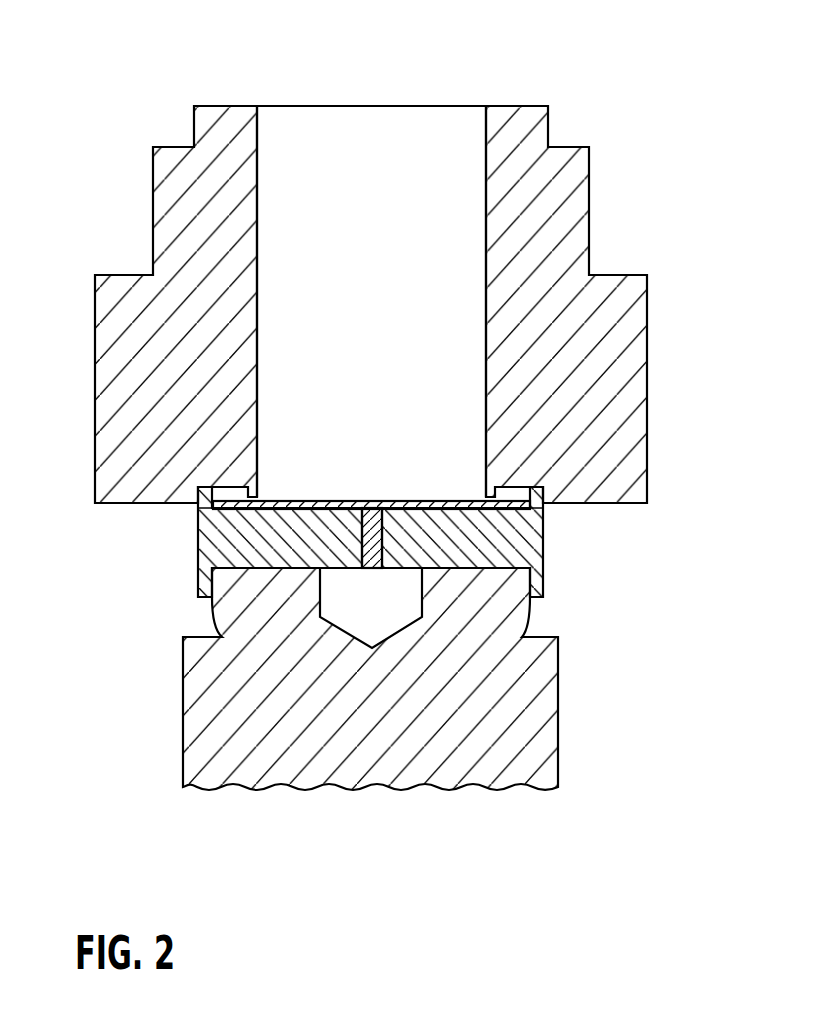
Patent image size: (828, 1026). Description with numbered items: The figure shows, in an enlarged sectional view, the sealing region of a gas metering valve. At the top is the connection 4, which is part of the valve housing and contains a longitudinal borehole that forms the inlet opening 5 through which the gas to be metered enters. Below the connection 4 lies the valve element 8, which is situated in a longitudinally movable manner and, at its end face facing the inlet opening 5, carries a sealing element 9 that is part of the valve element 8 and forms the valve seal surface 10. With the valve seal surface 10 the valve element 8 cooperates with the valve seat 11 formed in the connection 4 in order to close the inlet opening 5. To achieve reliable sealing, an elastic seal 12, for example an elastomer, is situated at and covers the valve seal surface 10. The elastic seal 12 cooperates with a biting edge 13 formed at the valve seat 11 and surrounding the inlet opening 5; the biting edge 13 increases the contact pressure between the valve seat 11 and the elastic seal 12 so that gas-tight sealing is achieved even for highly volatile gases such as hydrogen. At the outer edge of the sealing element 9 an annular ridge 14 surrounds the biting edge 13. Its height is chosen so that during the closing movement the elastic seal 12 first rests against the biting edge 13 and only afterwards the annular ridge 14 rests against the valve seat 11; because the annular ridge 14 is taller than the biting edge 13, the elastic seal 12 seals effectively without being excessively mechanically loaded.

The connection 4 is at (535, 217).
The inlet opening 5 is at (372, 152).
The valve element 8 is at (497, 610).
The sealing element 9 is at (510, 540).
The valve seal surface 10 is at (310, 498).
The valve seat 11 is at (214, 490).
The elastic seal 12 is at (447, 500).
The biting edge 13 is at (247, 493).
The annular ridge 14 is at (545, 493).